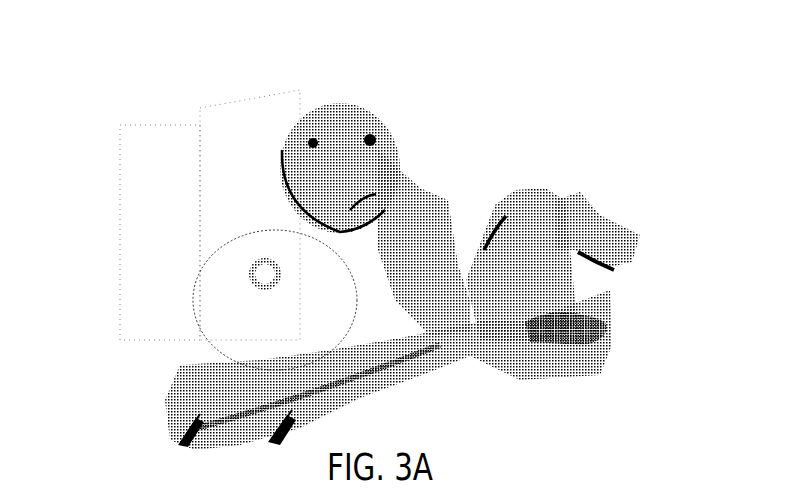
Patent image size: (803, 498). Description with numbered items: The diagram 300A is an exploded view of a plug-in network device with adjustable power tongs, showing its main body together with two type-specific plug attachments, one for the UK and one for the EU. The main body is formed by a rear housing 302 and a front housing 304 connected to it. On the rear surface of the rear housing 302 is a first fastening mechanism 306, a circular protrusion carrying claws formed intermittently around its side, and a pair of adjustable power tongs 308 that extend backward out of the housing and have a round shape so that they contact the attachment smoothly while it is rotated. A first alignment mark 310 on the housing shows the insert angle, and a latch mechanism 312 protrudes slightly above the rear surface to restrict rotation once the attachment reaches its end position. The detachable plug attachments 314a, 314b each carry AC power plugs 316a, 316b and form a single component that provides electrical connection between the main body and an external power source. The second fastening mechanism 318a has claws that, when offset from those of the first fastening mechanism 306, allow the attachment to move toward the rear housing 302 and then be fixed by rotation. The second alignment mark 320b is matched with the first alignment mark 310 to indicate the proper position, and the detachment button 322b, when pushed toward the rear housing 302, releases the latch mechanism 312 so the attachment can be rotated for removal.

The diagram 300A is at (601, 57).
The rear housing 302 is at (176, 108).
The front housing 304 is at (133, 127).
The first fastening mechanism 306 is at (366, 115).
The adjustable power tongs 308 is at (372, 138).
The first alignment mark 310 is at (402, 190).
The latch mechanism 312 is at (348, 223).
The detachable plug attachment 314a is at (558, 205).
The detachable plug attachment 314b is at (185, 290).
The AC power plug 316a is at (577, 324).
The AC power plug 316b is at (193, 420).
The second fastening mechanism 318a is at (488, 222).
The second alignment mark 320b is at (250, 232).
The detachment button 322b is at (263, 277).